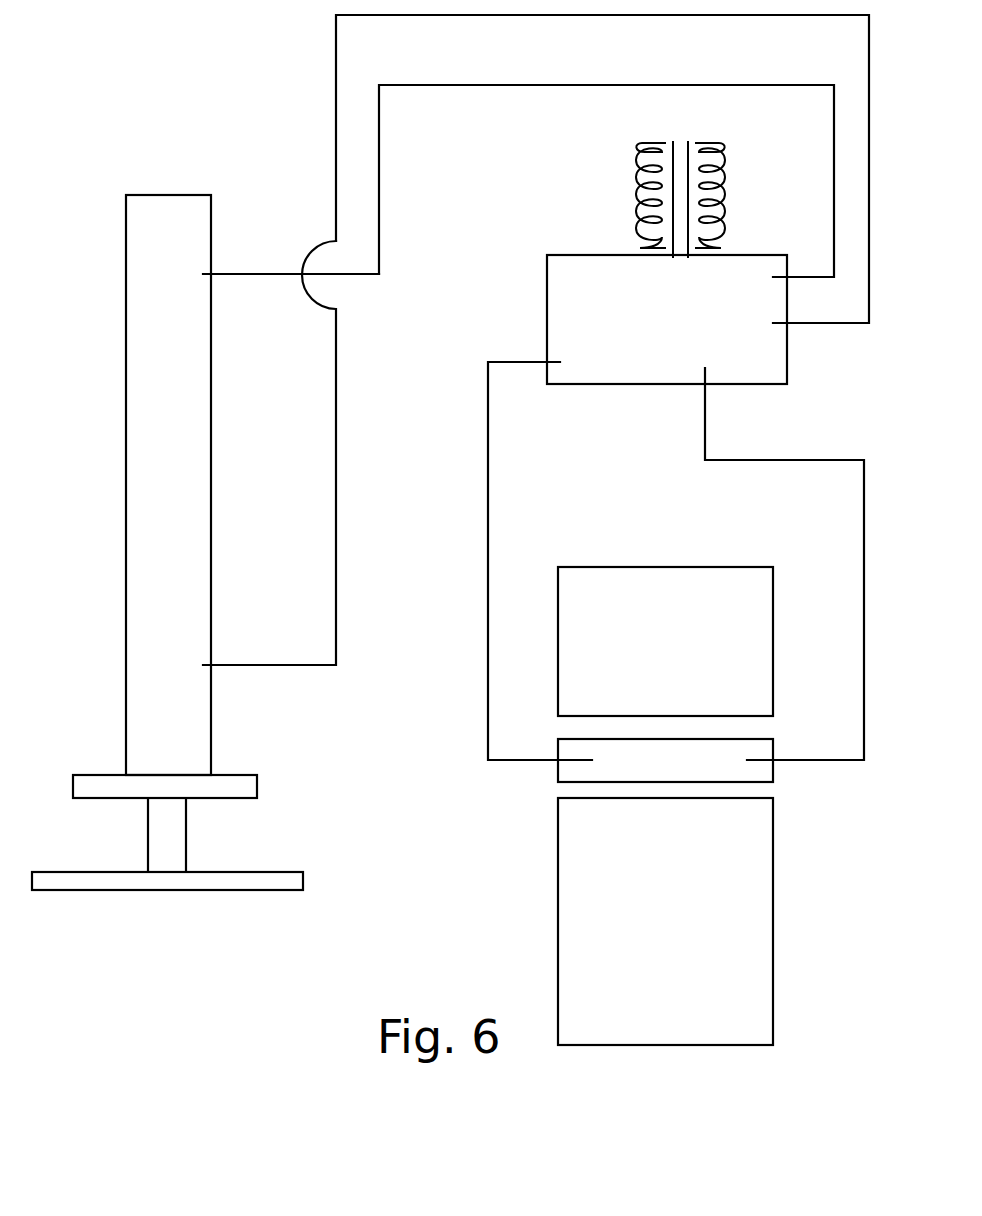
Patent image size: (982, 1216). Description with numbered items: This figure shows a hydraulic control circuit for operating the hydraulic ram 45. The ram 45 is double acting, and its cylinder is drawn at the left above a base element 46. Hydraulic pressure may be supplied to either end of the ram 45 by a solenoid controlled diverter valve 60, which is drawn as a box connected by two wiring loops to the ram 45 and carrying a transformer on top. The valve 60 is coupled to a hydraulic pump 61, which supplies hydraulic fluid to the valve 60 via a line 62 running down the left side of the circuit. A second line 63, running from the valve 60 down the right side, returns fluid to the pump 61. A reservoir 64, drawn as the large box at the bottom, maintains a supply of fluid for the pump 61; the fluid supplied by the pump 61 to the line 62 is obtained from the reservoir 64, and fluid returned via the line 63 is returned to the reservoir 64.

The hydraulic ram 45 is at (195, 557).
The base plate 46 is at (297, 882).
The solenoid controlled diverter valve 60 is at (682, 327).
The hydraulic pump 61 is at (772, 769).
The line 62 is at (488, 672).
The line 63 is at (798, 460).
The reservoir 64 is at (687, 930).